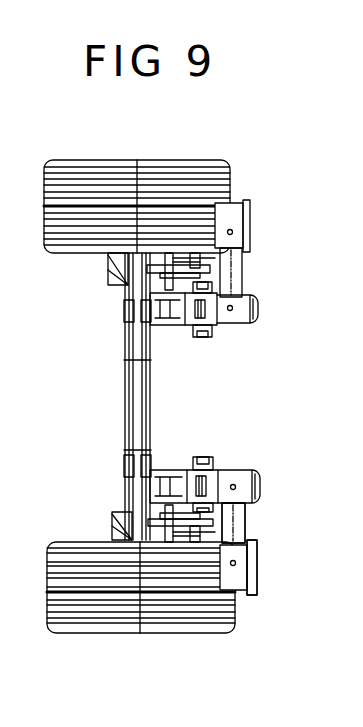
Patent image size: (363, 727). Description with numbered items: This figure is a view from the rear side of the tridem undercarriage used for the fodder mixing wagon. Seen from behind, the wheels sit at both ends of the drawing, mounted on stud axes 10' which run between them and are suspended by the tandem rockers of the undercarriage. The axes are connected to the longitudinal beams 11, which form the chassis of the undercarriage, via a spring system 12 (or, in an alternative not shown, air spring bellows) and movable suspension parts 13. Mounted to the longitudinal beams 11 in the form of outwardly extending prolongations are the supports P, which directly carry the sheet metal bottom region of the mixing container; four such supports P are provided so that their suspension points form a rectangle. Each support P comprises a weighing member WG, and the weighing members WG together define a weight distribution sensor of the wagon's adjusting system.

The stud axes 10' is at (100, 396).
The longitudinal beams 11 is at (240, 470).
The spring system 12 is at (175, 478).
The movable suspension parts 13 is at (190, 478).
The weighing members WG is at (240, 522).
The supports P is at (250, 540).